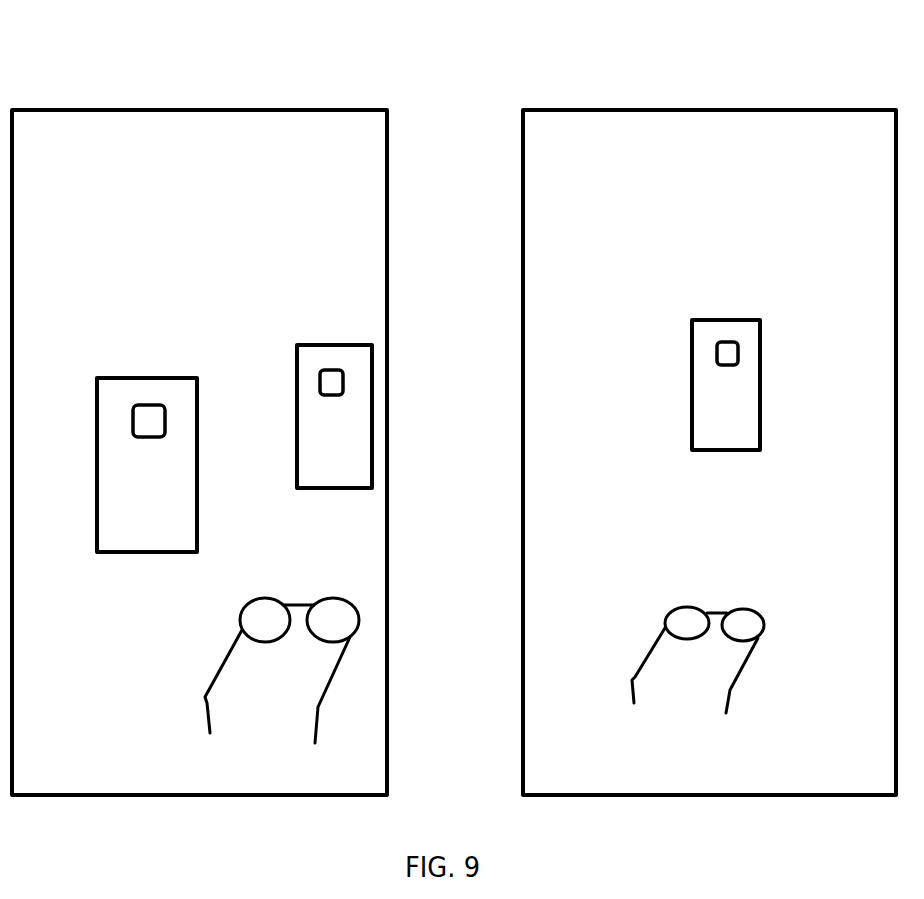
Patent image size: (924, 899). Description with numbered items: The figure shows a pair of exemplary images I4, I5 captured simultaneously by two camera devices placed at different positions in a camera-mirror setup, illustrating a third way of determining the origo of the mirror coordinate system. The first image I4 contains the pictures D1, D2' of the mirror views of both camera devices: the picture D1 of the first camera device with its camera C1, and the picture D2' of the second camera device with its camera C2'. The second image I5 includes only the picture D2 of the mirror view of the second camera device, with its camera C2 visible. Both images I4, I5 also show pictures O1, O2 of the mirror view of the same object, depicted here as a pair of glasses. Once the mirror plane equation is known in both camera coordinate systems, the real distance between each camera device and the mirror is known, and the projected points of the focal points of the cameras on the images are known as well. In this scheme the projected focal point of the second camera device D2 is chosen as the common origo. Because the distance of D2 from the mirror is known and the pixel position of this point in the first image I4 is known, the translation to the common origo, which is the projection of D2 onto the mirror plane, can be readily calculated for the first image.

The first image I4 is at (231, 108).
The second image I5 is at (750, 108).
The picture of the mirror view of the first camera device D1 is at (198, 527).
The camera of the first camera device C1 is at (140, 404).
The picture of the mirror view of the second camera device in the first image D2' is at (299, 416).
The camera of the second camera device in the first image C2' is at (315, 330).
The picture of the mirror view of the second camera device D2 is at (767, 388).
The camera of the second camera device C2 is at (747, 302).
The picture of the mirror view of the object in the first image O1 is at (204, 732).
The picture of the mirror view of the object in the second image O2 is at (740, 677).